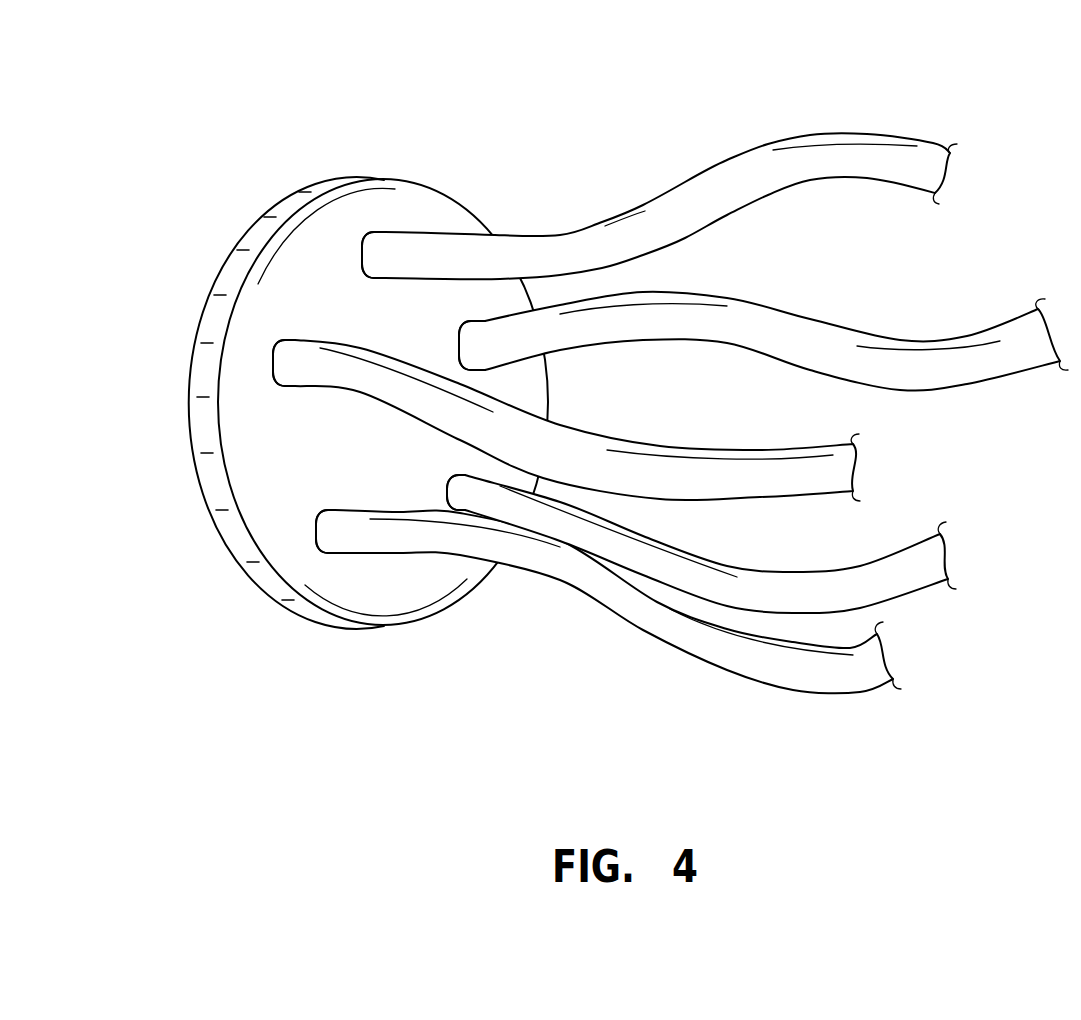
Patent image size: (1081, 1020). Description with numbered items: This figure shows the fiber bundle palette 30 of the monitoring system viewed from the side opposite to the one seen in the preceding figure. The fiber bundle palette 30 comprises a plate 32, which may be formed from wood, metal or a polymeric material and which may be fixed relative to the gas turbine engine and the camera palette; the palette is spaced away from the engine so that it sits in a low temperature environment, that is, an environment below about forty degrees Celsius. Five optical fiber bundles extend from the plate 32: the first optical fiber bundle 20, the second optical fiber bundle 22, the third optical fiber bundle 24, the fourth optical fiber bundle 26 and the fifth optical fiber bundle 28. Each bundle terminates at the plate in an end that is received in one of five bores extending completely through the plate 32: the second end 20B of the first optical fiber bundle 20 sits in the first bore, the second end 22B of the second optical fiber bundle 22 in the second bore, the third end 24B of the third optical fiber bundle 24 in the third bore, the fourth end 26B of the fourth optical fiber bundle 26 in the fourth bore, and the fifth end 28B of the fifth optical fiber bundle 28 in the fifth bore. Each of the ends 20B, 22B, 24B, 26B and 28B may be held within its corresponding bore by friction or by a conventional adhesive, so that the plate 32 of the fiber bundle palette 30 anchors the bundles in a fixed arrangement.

The first optical fiber bundle 20 is at (689, 305).
The second end of the first optical fiber bundle 20B is at (463, 352).
The second optical fiber bundle 22 is at (659, 156).
The second end of the second optical fiber bundle 22B is at (371, 227).
The third optical fiber bundle 24 is at (541, 417).
The third end of the third optical fiber bundle 24B is at (276, 375).
The fourth optical fiber bundle 26 is at (641, 579).
The fourth end of the fourth optical fiber bundle 26B is at (449, 497).
The fifth optical fiber bundle 28 is at (505, 618).
The fifth end of the fifth optical fiber bundle 28B is at (318, 547).
The fiber bundle palette 30 is at (245, 213).
The plate 32 is at (328, 233).